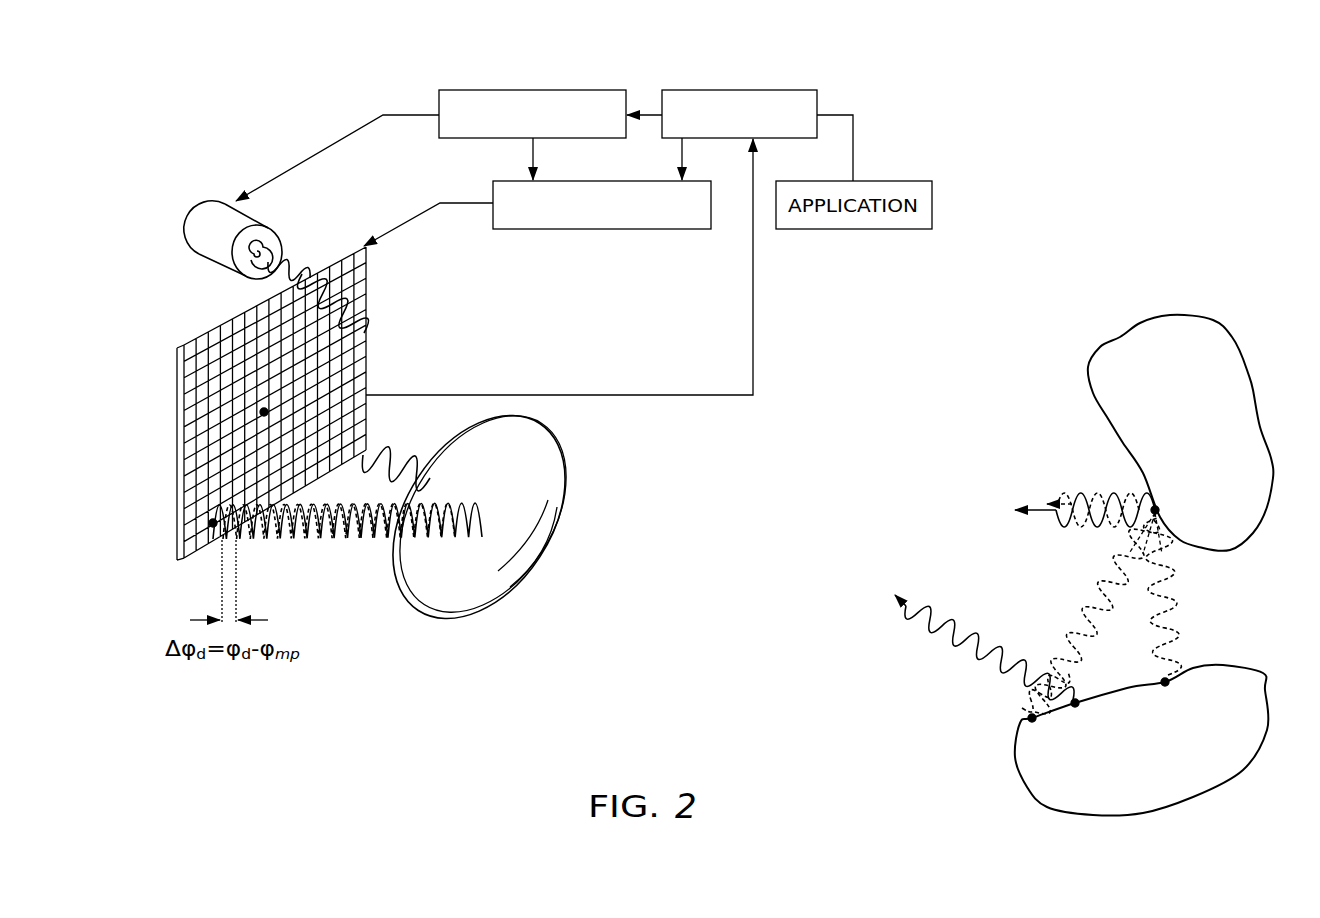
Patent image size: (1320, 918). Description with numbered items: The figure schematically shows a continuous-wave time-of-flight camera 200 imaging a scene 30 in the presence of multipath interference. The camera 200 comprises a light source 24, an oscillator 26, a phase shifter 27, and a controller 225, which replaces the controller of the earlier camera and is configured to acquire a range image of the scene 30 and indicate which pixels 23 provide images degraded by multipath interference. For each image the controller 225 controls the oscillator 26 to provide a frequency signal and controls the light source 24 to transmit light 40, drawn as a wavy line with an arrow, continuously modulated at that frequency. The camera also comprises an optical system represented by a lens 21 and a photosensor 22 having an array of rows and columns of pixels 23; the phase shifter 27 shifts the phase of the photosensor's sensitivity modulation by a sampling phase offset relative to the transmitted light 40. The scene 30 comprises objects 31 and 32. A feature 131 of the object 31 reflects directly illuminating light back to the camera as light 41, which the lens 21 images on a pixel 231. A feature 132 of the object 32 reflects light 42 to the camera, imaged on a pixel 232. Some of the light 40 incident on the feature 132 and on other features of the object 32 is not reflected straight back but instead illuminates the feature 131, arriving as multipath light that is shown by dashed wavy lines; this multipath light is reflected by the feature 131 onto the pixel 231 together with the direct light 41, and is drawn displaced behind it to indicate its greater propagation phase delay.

The CW-TOF camera 200 is at (121, 174).
The light source 24 is at (206, 196).
The oscillator 26 is at (530, 89).
The controller 225 is at (697, 89).
The phase shifter 27 is at (493, 190).
The transmitted light 40 is at (372, 322).
The pixels 23 is at (178, 360).
The pixel 232 is at (261, 413).
The photosensor 22 is at (123, 476).
The pixel 231 is at (210, 527).
The reflected light 41 is at (326, 542).
The reflected light 42 is at (397, 462).
The lens 21 is at (479, 612).
The scene 30 is at (1189, 278).
The object 31 is at (1207, 436).
The feature 131 is at (1160, 508).
The feature 132 is at (1075, 705).
The object 32 is at (1244, 711).